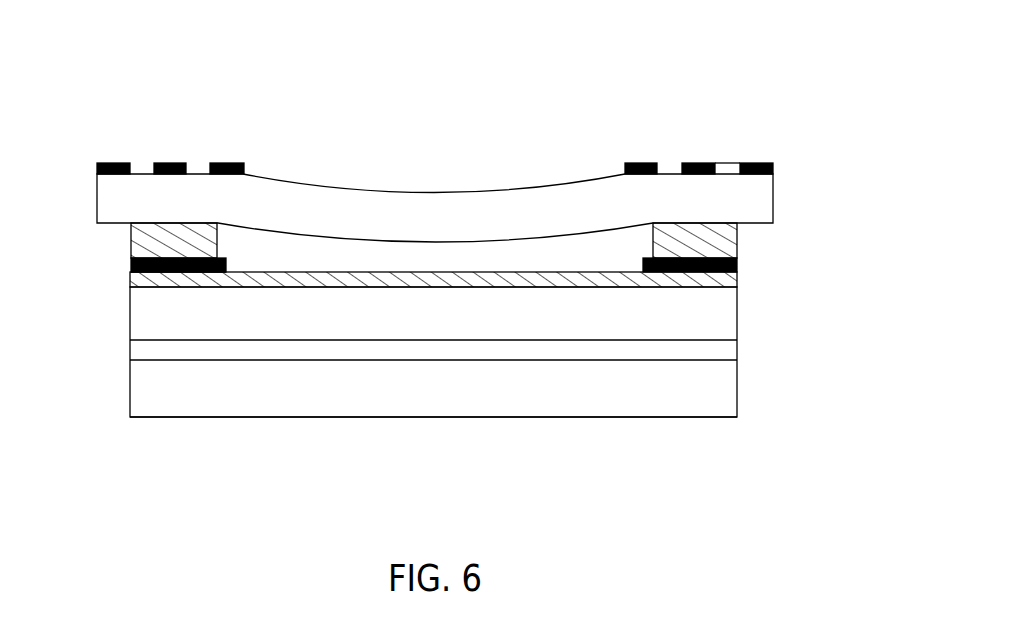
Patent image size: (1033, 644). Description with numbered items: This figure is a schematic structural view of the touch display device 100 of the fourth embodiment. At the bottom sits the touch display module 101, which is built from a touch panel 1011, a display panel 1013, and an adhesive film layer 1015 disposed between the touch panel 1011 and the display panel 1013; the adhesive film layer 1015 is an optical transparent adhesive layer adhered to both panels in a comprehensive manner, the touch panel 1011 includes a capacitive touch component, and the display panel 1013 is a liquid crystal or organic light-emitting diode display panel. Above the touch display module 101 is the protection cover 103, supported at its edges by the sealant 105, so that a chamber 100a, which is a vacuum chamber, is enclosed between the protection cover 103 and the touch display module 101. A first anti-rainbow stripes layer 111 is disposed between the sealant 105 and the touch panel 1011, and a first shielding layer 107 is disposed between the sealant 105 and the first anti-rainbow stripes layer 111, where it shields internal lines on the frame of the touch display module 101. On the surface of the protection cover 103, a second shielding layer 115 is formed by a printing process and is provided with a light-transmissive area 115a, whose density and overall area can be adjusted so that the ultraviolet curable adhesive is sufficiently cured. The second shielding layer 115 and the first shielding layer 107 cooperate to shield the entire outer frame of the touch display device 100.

The touch display device 100 is at (160, 128).
The chamber 100a is at (400, 257).
The touch display module 101 is at (125, 290).
The touch panel 1011 is at (727, 298).
The adhesive film layer 1015 is at (728, 350).
The display panel 1013 is at (727, 398).
The protection cover 103 is at (757, 208).
The sealant 105 is at (737, 243).
The first shielding layer 107 is at (737, 267).
The first anti-rainbow stripes layer 111 is at (130, 277).
The second shielding layer 115 is at (773, 167).
The light-transmissive area 115a is at (730, 163).